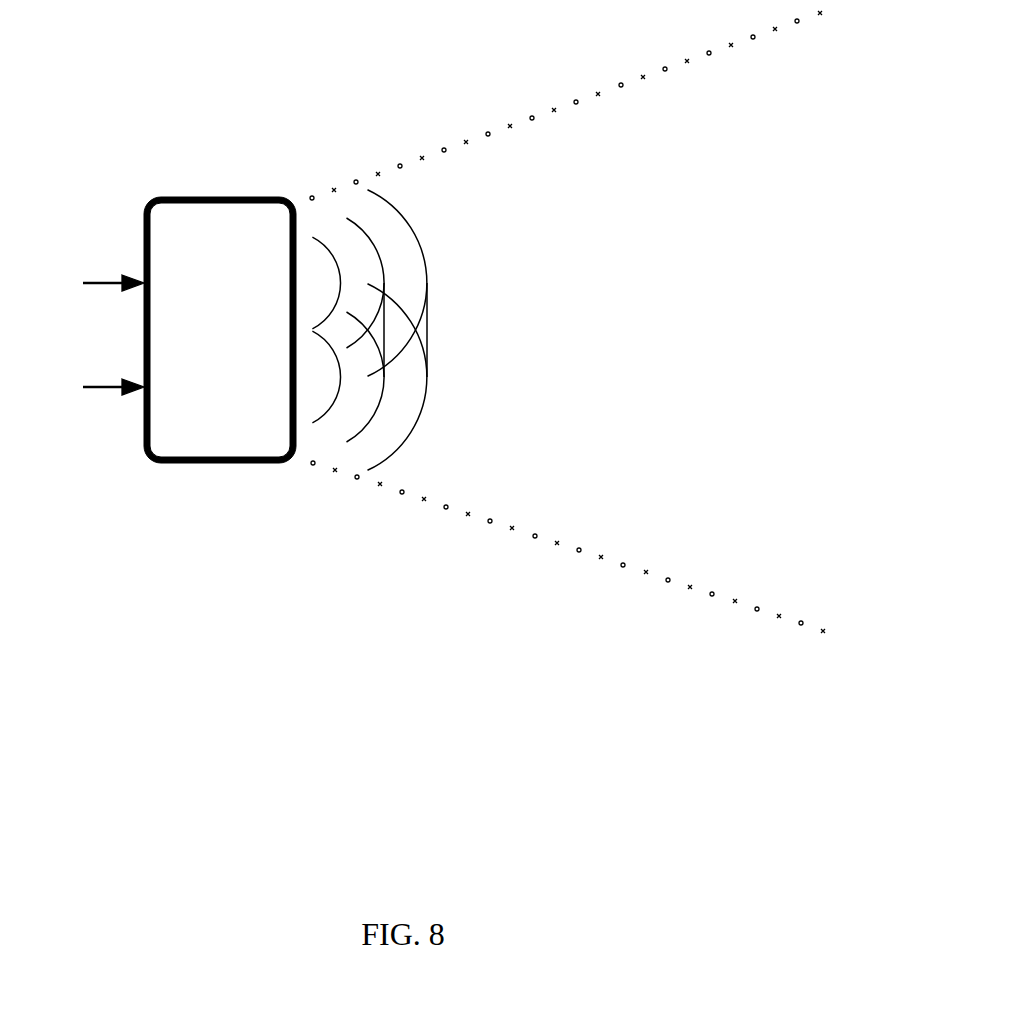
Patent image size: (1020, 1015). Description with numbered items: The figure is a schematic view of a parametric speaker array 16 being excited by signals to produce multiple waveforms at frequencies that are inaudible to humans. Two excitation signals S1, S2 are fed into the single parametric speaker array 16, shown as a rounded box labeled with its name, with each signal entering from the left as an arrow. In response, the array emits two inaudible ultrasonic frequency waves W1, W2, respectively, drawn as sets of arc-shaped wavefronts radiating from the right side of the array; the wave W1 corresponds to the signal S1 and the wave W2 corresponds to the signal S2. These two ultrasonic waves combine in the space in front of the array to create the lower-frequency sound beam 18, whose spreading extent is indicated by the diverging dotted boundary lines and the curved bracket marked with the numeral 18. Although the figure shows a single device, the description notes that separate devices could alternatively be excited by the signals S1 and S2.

The parametric speaker array 16 is at (220, 197).
The sound beam 18 is at (704, 57).
The signal S1 is at (99, 285).
The signal S2 is at (99, 389).
The ultrasonic frequency wave W1 is at (423, 267).
The ultrasonic frequency wave W2 is at (423, 405).